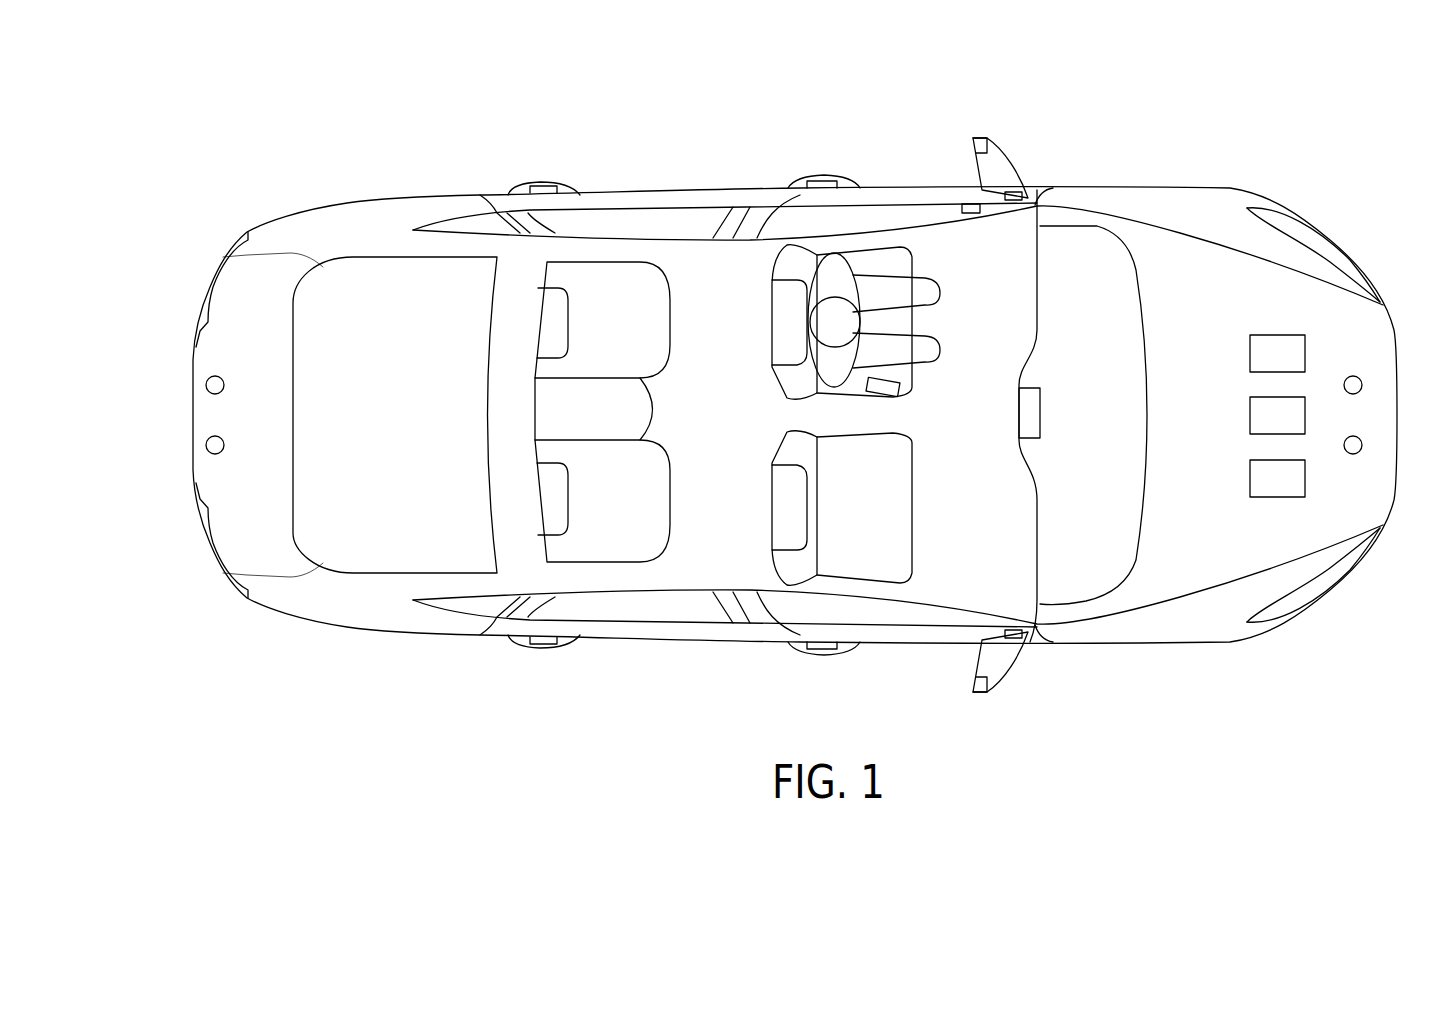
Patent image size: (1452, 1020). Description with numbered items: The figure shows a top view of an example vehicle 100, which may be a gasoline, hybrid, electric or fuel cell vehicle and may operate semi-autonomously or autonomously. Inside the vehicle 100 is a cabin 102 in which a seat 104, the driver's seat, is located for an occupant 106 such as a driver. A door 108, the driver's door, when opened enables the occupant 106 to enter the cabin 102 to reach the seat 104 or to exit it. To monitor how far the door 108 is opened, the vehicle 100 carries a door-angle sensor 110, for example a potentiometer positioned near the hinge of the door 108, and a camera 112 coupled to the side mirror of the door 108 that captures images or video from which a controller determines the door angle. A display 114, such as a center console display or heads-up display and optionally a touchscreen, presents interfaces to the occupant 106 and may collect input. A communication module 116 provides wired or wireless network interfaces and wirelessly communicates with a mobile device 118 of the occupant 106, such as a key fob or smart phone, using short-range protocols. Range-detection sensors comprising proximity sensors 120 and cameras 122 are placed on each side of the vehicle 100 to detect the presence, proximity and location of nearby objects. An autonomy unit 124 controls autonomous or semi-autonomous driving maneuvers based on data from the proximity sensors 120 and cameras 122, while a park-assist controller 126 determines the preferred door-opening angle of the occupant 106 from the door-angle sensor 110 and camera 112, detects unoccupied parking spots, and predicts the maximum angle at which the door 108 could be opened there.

The vehicle 100 is at (1172, 203).
The cabin 102 is at (753, 425).
The seat 104 is at (782, 305).
The occupant 106 is at (835, 270).
The door 108 is at (875, 218).
The door-angle sensor 110 is at (970, 207).
The camera 112 is at (977, 137).
The display 114 is at (1029, 416).
The communication module 116 is at (1295, 365).
The mobile device 118 is at (902, 388).
The proximity sensors 120 is at (206, 385).
The cameras 122 is at (206, 445).
The autonomy unit 124 is at (1295, 427).
The park-assist controller 126 is at (1295, 490).